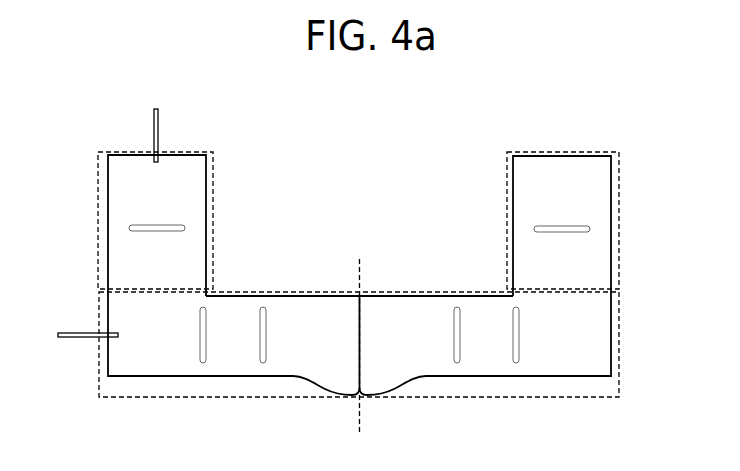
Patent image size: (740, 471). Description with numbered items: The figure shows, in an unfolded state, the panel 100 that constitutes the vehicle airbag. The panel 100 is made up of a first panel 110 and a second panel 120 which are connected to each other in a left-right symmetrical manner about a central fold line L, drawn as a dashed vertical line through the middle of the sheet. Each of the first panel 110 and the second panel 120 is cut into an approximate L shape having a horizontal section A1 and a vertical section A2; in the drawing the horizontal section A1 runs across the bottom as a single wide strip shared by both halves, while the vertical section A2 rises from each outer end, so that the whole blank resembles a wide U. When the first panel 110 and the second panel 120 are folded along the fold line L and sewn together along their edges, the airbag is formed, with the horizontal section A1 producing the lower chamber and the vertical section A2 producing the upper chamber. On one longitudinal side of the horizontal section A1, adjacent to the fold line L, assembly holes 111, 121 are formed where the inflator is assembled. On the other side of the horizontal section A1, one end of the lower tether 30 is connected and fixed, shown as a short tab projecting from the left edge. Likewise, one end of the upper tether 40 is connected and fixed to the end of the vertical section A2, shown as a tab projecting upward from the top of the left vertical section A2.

The panel 100 is at (145, 98).
The first panel 110 is at (121, 262).
The second panel 120 is at (597, 262).
The assembly hole 111 is at (350, 375).
The assembly hole 121 is at (369, 375).
The upper tether 40 is at (153, 122).
The lower tether 30 is at (63, 337).
The horizontal section A1 is at (620, 325).
The vertical section A2 is at (98, 178).
The fold line L is at (360, 332).